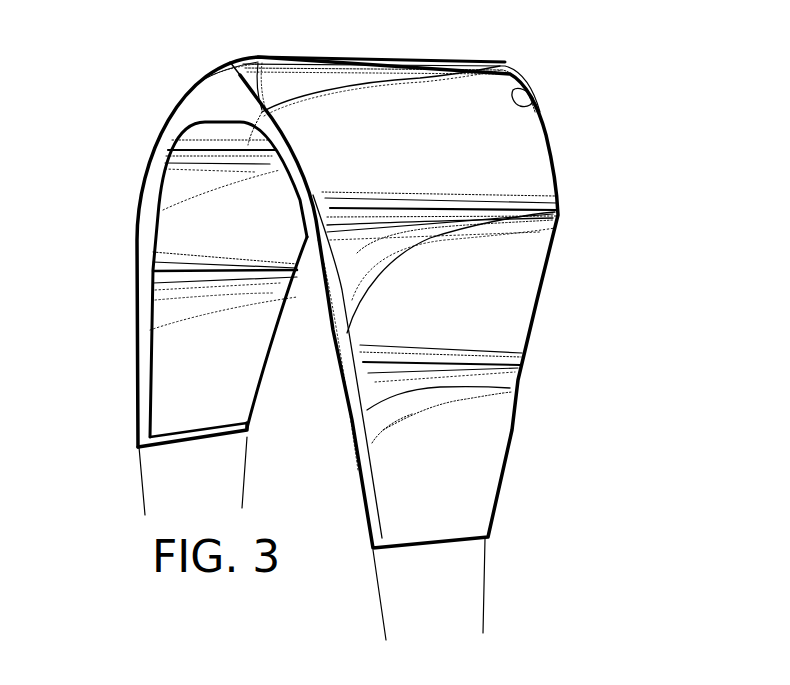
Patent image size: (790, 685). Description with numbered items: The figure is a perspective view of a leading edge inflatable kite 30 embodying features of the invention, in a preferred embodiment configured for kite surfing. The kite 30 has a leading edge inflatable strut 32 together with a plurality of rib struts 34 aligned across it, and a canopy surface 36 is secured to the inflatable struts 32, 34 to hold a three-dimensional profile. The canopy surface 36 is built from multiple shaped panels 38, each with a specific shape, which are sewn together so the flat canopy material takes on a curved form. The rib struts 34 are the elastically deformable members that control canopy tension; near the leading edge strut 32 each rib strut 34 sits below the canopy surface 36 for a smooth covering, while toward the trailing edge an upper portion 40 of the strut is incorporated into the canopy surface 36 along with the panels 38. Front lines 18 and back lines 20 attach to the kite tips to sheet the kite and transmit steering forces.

The kite 30 is at (126, 43).
The leading edge inflatable strut 32 is at (163, 135).
The rib struts 34 is at (225, 275).
The canopy surface 36 is at (463, 38).
The panels 38 is at (507, 138).
The upper portion of strut 40 is at (425, 220).
The front lines 18 is at (141, 480).
The back lines 20 is at (247, 467).